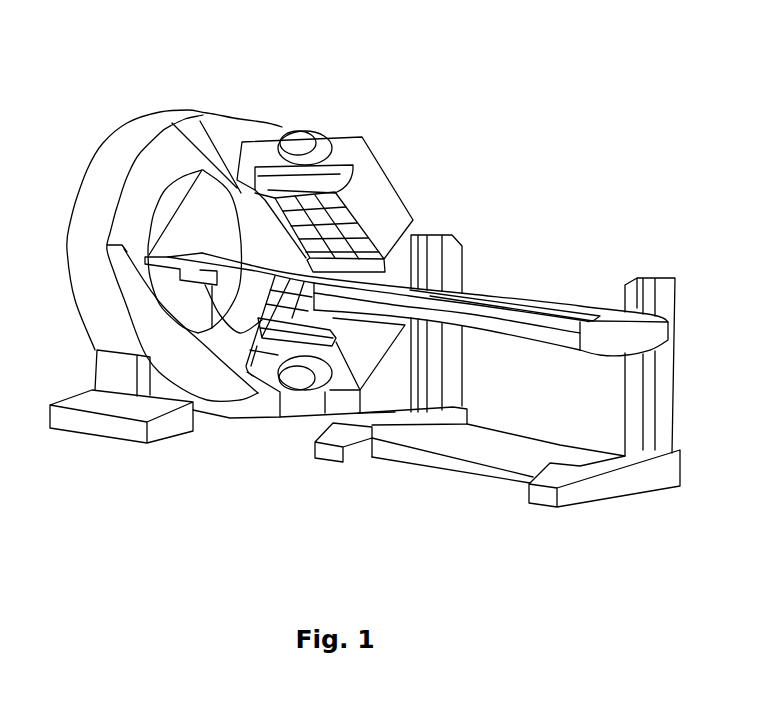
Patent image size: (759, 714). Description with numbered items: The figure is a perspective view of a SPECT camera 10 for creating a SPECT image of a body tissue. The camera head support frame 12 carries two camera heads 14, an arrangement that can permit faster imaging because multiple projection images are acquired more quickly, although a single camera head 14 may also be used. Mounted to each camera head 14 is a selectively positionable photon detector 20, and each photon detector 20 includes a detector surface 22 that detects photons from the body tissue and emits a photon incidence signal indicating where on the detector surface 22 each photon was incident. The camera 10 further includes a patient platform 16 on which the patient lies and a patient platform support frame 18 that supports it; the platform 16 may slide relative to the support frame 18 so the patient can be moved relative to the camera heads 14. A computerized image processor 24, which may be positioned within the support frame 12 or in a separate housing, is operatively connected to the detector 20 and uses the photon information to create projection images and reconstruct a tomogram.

The SPECT camera 10 is at (538, 160).
The camera head support frame 12 is at (162, 110).
The camera heads 14 is at (389, 172).
The patient platform 16 is at (497, 290).
The patient platform support frame 18 is at (620, 497).
The photon detector 20 is at (345, 165).
The detector surface 22 is at (282, 135).
The computerized image processor 24 is at (131, 118).